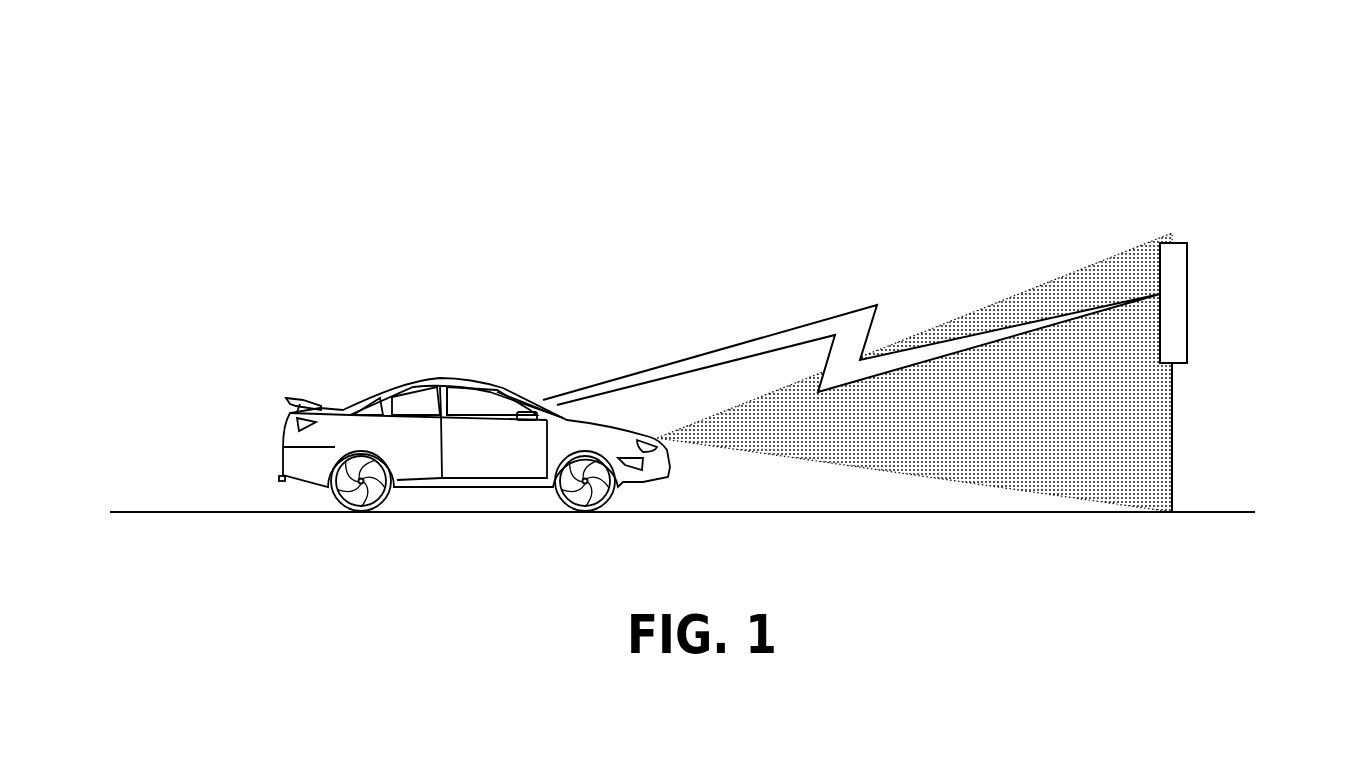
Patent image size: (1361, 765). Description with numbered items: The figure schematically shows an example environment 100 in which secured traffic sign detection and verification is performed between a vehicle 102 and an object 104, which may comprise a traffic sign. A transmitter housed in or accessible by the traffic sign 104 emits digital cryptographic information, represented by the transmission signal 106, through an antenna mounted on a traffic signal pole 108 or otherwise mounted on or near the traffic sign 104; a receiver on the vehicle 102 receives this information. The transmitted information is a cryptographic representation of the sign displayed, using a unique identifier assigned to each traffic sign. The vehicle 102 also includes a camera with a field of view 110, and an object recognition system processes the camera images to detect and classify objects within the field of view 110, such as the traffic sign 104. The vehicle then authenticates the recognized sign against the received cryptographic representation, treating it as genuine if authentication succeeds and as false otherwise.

The environment 100 is at (82, 61).
The vehicle 102 is at (453, 378).
The object 104 is at (1188, 290).
The transmission signal 106 is at (870, 305).
The traffic signal pole 108 is at (1172, 453).
The field of view 110 is at (1022, 292).